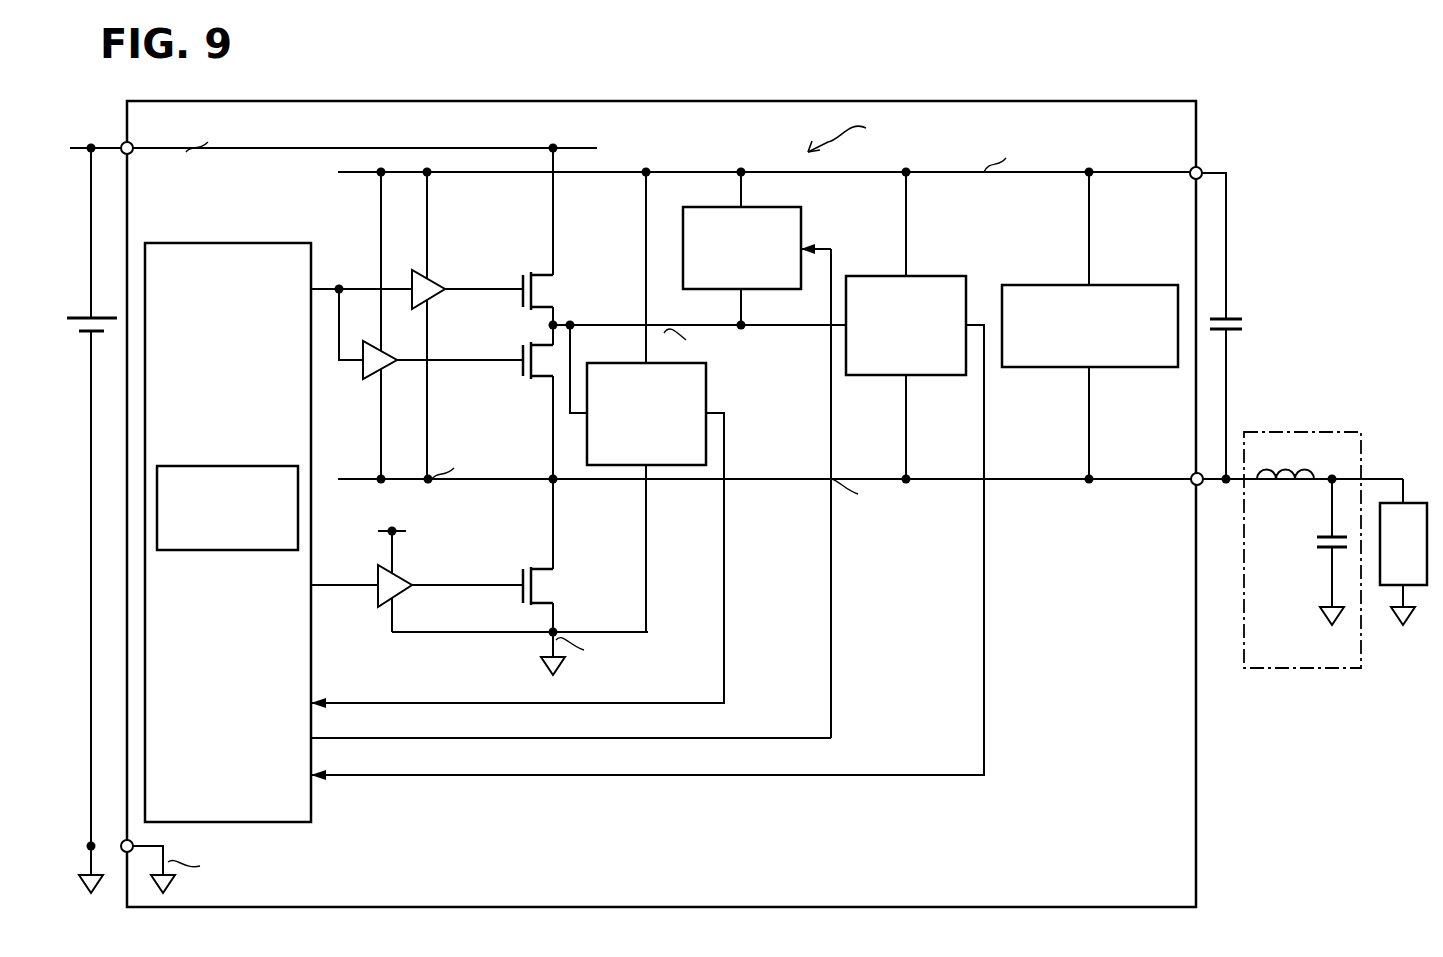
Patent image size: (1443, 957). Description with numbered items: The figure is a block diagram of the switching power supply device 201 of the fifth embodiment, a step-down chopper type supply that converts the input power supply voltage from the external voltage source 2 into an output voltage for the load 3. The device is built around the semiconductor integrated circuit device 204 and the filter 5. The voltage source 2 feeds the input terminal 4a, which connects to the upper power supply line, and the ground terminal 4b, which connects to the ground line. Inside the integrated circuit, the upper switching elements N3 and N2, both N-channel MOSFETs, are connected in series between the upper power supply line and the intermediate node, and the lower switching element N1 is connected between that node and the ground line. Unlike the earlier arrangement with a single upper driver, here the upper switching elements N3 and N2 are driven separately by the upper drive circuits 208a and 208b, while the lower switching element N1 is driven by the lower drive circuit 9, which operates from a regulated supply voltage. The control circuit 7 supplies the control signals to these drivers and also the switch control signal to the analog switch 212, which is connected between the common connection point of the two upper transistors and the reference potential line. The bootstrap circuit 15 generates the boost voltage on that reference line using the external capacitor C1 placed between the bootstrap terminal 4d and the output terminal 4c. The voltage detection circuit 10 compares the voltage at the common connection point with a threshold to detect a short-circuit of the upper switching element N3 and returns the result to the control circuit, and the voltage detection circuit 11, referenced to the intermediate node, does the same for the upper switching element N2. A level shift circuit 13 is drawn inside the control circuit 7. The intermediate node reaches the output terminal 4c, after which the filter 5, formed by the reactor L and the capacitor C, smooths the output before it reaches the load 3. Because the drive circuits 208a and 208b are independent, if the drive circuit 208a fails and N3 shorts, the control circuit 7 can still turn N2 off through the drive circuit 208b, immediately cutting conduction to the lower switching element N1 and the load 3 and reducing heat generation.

The voltage source 2 is at (82, 315).
The load 3 is at (1386, 586).
The input terminal 4a is at (122, 143).
The ground terminal 4b is at (122, 842).
The output terminal 4c is at (1200, 486).
The bootstrap terminal 4d is at (1203, 169).
The filter 5 is at (1302, 520).
The control circuit 7 is at (228, 243).
The lower drive circuit 9 is at (376, 578).
The voltage detection circuit 10 is at (708, 400).
The voltage detection circuit 11 is at (938, 276).
The level shift circuit 13 is at (228, 466).
The bootstrap circuit 15 is at (1140, 285).
The switching power supply device 201 is at (1290, 148).
The semiconductor integrated circuit device 204 is at (748, 101).
The upper drive circuit 208a is at (438, 272).
The upper drive circuit 208b is at (362, 372).
The analog switch 212 is at (802, 226).
The lower switching element N1 is at (562, 583).
The upper switching element N2 is at (527, 382).
The upper switching element N3 is at (562, 293).
The capacitor C1 is at (1248, 326).
The reactor L is at (1284, 490).
The capacitor C is at (1314, 543).